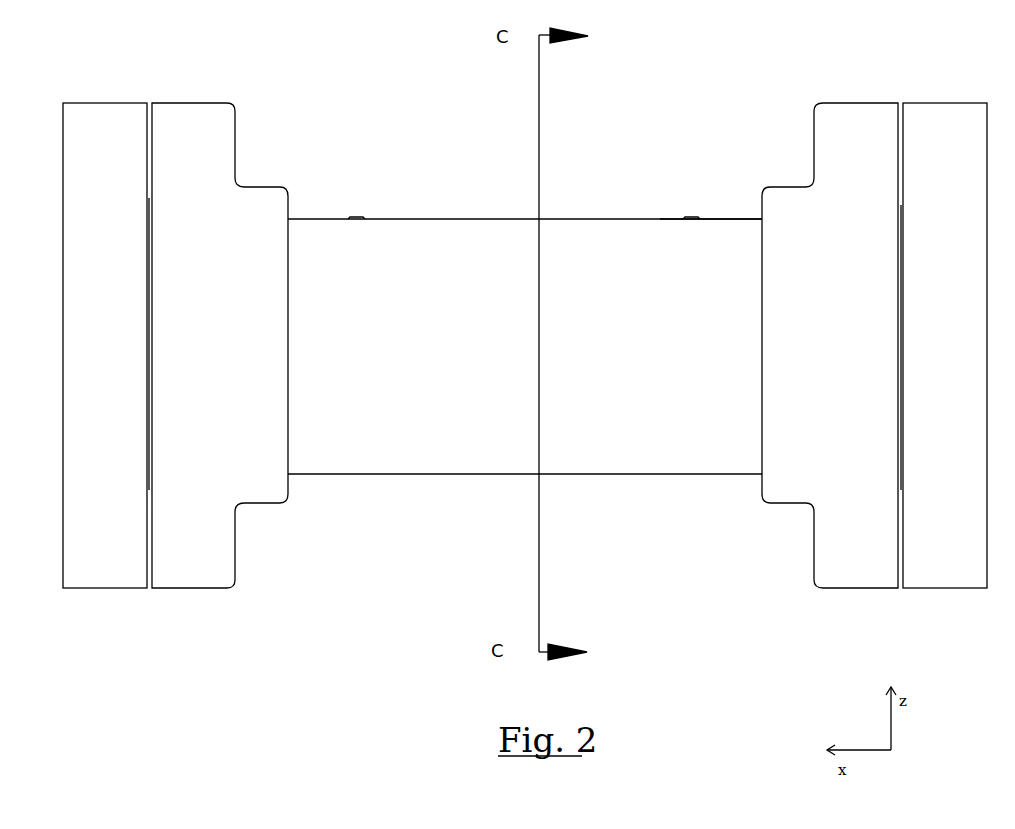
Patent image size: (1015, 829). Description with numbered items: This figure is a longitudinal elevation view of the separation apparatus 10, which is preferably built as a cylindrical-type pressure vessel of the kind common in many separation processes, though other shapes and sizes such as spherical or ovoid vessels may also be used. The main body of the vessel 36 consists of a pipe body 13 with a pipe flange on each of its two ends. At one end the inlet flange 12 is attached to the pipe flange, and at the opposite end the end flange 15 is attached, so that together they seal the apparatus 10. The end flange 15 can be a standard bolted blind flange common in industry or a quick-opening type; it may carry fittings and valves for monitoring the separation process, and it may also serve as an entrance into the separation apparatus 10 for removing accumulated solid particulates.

The separation apparatus 10 is at (284, 66).
The inlet flange 12 is at (927, 378).
The pipe body 13 is at (525, 309).
The end flange 15 is at (125, 377).
The vessel 36 is at (690, 182).